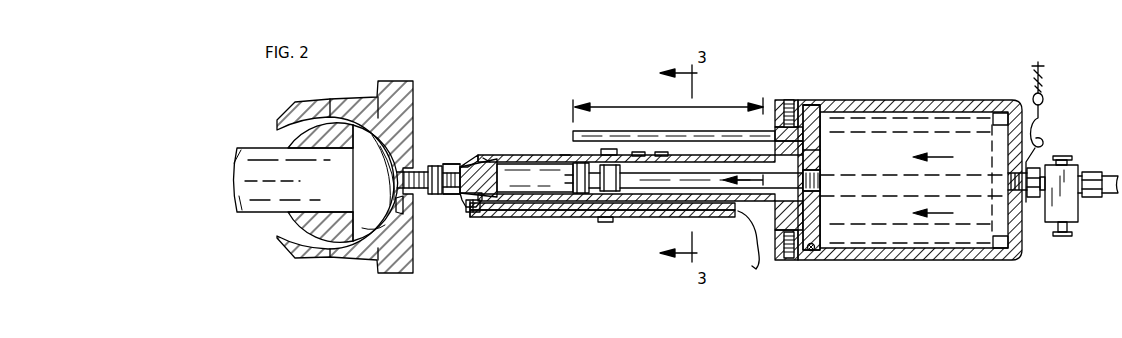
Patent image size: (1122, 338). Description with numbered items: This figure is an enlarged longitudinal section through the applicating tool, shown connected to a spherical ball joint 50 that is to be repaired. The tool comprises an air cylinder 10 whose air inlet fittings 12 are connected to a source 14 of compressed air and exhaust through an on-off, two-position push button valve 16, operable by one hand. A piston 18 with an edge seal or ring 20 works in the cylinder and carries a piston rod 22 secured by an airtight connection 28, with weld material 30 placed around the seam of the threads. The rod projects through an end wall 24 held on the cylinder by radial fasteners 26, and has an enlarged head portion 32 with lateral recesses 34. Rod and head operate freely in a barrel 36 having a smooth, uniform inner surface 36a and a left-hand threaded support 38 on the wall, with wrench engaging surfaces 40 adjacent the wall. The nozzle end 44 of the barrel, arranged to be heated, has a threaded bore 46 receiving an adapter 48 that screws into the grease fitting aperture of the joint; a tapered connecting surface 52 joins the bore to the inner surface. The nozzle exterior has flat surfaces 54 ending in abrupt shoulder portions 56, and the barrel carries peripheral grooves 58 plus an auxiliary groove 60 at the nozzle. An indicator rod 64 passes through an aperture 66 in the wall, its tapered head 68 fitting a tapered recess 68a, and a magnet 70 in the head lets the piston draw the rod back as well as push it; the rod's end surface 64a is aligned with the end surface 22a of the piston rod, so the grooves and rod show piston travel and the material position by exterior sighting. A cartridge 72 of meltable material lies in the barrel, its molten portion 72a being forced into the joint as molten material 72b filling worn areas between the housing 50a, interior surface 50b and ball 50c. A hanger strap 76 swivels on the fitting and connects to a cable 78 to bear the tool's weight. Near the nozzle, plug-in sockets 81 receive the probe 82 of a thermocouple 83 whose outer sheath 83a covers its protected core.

The air cylinder 10 is at (895, 100).
The air inlet fitting 12 is at (1033, 199).
The source of compressed air 14 is at (1110, 175).
The push button valve 16 is at (1080, 165).
The piston 18 is at (821, 220).
The edge seal or ring 20 is at (811, 251).
The piston rod 22 is at (688, 173).
The end surface of piston rod 22a is at (567, 183).
The end wall 24 is at (775, 238).
The radial fasteners 26 is at (787, 99).
The connection 28 is at (822, 184).
The weld material 30 is at (820, 172).
The enlarged head portion 32 is at (615, 192).
The lateral recesses 34 is at (585, 194).
The barrel 36 is at (548, 158).
The inner surface of barrel 36a is at (565, 156).
The threaded support 38 is at (783, 157).
The wrench engaging surfaces 40 is at (768, 201).
The nozzle end of barrel 44 is at (452, 164).
The threaded bore 46 is at (446, 164).
The adapter 48 is at (433, 166).
The ball joint 50 is at (418, 76).
The housing of the joint 50a is at (318, 102).
The interior surface of the joint 50b is at (362, 99).
The ball 50c is at (357, 191).
The tapered connecting surface 52 is at (476, 157).
The flat surfaces 54 is at (452, 195).
The shoulder portions 56 is at (468, 160).
The peripheral grooves 58 is at (638, 153).
The auxiliary groove 60 is at (487, 163).
The indicator rod 64 is at (604, 130).
The end surface of indicator rod 64a is at (567, 130).
The aperture 66 is at (775, 130).
The tapered head 68 is at (807, 125).
The tapered recess 68a is at (805, 112).
The magnet 70 is at (810, 150).
The cartridge 72 is at (520, 170).
The molten portion of cartridge 72a is at (461, 194).
The molten material in joint 72b is at (398, 212).
The hanger strap 76 is at (1040, 150).
The cable 78 is at (1044, 75).
The plug-in sockets 81 is at (484, 160).
The probe 82 is at (480, 208).
The thermocouple 83 is at (651, 226).
The outer sheath 83a is at (520, 218).